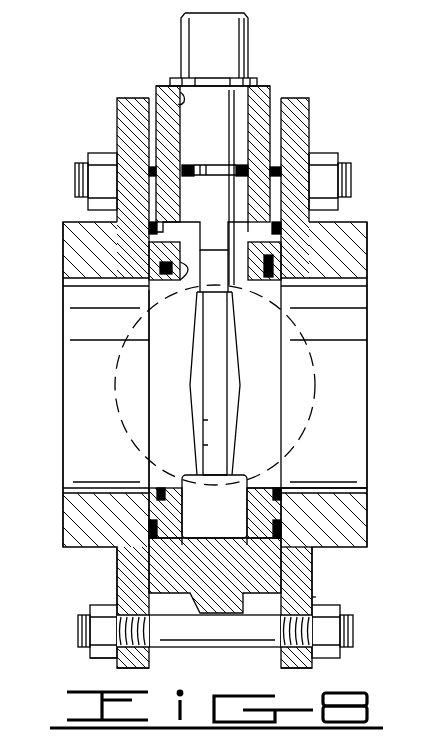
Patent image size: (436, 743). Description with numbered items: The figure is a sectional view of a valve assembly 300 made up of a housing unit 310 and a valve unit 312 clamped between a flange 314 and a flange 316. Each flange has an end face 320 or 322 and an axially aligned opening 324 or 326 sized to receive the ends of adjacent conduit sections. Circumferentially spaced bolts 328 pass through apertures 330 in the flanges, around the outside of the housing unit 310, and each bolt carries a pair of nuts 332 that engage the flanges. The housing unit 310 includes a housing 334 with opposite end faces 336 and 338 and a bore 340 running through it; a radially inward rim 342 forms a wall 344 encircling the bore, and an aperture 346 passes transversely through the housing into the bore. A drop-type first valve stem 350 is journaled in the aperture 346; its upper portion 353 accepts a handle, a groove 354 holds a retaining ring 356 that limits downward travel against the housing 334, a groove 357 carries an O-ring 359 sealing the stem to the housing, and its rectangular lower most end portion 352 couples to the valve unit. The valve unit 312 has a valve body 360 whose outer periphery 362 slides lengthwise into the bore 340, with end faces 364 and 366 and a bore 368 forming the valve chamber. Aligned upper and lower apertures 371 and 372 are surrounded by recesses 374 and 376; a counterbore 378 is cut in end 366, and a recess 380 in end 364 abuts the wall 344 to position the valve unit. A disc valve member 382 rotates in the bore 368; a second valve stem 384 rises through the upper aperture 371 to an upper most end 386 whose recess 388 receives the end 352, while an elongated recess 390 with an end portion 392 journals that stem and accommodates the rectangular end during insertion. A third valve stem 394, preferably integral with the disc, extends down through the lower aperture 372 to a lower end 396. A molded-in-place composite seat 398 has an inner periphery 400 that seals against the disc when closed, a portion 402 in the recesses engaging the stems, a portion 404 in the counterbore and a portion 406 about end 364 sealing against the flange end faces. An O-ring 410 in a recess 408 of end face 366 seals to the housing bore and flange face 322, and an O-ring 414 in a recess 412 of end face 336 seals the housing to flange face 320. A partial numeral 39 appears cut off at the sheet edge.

The valve assembly 300 is at (252, 50).
The housing unit 310 is at (282, 88).
The valve unit 312 is at (277, 174).
The flange 314 is at (118, 670).
The flange 316 is at (313, 668).
The end face 320 is at (150, 662).
The end face 322 is at (284, 660).
The opening 324 is at (82, 483).
The opening 326 is at (358, 482).
The bolt 328 is at (80, 180).
The aperture 330 is at (82, 616).
The nut 332 is at (100, 175).
The housing 334 is at (255, 109).
The end face 336 is at (140, 585).
The end face 338 is at (312, 597).
The bore 340 is at (232, 613).
The rim 342 is at (150, 522).
The wall 344 is at (149, 470).
The aperture 346 is at (192, 98).
The first valve stem 350 is at (180, 82).
The lower most end portion 352 is at (232, 296).
The upper portion 353 is at (223, 30).
The groove 354 is at (199, 80).
The retaining ring 356 is at (252, 80).
The groove 357 is at (207, 165).
The O-ring 359 is at (180, 170).
The valve body 360 is at (282, 518).
The outer periphery 362 is at (312, 572).
The end face 364 is at (82, 500).
The end face 366 is at (320, 526).
The bore 368 is at (282, 471).
The upper aperture 371 is at (149, 296).
The lower aperture 372 is at (235, 545).
The recess 374 is at (172, 222).
The recess 376 is at (184, 515).
The counterbore 378 is at (345, 492).
The recess 380 is at (186, 545).
The disc valve member 382 is at (237, 378).
The second valve stem 384 is at (282, 292).
The upper most end 386 is at (284, 232).
The recess 388 is at (191, 294).
The elongated recess 390 is at (180, 189).
The end portion 392 is at (284, 251).
The third valve stem 394 is at (265, 468).
The lower end 396 is at (232, 540).
The composite seat 398 is at (178, 450).
The inner periphery 400 is at (149, 456).
The portion 402 is at (150, 262).
The portion 404 is at (367, 267).
The portion 406 is at (150, 246).
The recess 408 is at (282, 540).
The O-ring 410 is at (300, 565).
The recess 412 is at (150, 542).
The O-ring 414 is at (140, 568).
The partial numeral 39 is at (427, 235).